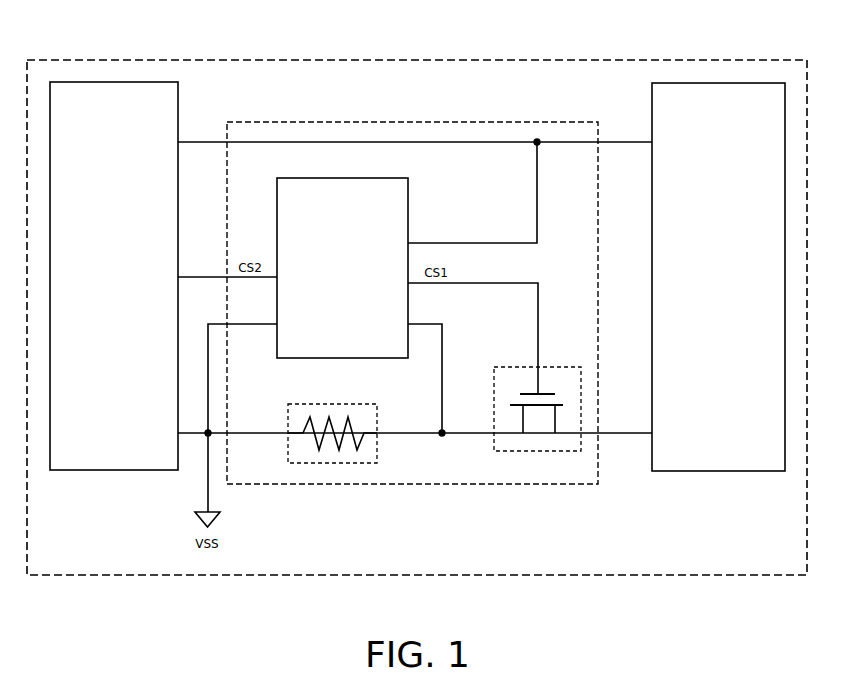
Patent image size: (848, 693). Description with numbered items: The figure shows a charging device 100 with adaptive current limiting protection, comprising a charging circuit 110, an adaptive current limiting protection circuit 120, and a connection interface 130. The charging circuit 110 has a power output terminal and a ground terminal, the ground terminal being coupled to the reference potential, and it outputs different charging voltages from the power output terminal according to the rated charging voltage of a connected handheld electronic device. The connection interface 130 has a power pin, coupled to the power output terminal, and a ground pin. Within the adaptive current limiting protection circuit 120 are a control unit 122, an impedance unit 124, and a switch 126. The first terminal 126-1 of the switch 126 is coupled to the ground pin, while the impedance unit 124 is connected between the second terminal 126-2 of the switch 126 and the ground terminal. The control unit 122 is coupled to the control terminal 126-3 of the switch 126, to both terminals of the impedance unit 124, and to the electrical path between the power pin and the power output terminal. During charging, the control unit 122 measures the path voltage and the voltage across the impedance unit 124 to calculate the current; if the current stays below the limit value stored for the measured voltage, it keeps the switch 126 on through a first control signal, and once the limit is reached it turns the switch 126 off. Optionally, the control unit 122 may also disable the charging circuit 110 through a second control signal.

The charging device 100 is at (776, 617).
The charging circuit 110 is at (111, 82).
The adaptive current limiting protection circuit 120 is at (290, 121).
The control unit 122 is at (373, 178).
The impedance unit 124 is at (345, 463).
The switch 126 is at (556, 418).
The first terminal 126-1 is at (583, 440).
The second terminal 126-2 is at (479, 434).
The control terminal 126-3 is at (537, 367).
The connection interface 130 is at (722, 83).